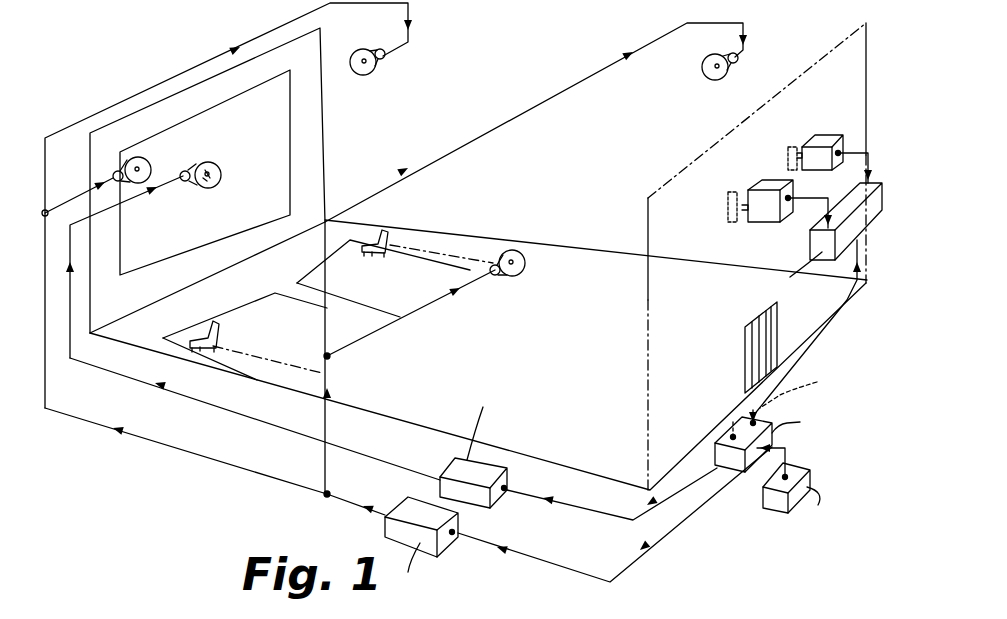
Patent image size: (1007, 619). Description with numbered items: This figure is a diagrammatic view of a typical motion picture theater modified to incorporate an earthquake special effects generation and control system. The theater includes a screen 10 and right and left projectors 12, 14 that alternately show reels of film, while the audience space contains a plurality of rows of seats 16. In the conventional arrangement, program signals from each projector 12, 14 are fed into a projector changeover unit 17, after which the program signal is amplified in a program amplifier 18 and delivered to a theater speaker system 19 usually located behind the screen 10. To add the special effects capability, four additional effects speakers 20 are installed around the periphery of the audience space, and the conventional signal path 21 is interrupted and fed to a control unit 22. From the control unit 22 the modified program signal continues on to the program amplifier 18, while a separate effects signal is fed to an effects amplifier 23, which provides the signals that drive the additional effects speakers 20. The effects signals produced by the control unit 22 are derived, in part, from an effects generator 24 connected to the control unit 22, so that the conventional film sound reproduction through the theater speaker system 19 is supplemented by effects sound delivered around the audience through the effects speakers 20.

The screen 10 is at (255, 105).
The right projector 12 is at (823, 103).
The left projector 14 is at (765, 182).
The rows of seats 16 is at (213, 320).
The projector changeover unit 17 is at (880, 205).
The program amplifier 18 is at (453, 468).
The theater speaker system 19 is at (221, 173).
The effects speakers 20 is at (163, 120).
The conventional signal path 21 is at (745, 412).
The control unit 22 is at (733, 455).
The effects amplifier 23 is at (395, 513).
The effects generator 24 is at (770, 503).